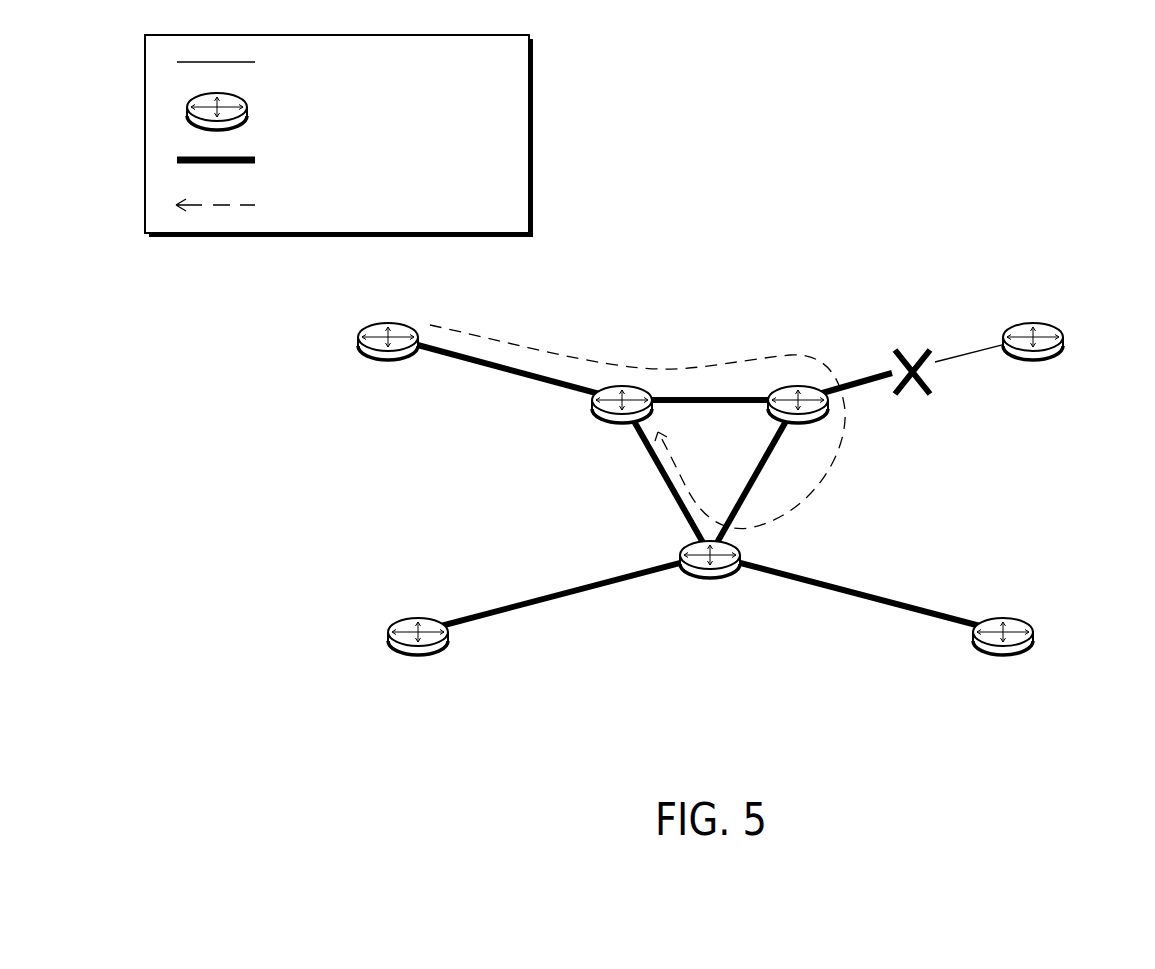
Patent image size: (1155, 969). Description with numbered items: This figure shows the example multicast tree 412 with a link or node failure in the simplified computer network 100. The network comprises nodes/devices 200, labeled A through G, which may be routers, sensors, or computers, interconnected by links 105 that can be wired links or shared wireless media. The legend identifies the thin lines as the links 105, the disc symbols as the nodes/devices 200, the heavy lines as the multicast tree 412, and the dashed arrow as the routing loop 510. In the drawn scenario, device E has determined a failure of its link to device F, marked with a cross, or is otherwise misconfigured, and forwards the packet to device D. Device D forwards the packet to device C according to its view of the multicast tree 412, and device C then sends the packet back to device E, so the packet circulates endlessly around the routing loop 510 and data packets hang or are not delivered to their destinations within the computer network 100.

The computer network 100 is at (978, 165).
The links 105 is at (605, 205).
The nodes/devices 200 is at (625, 392).
The multicast tree 412 is at (590, 389).
The routing loop 510 is at (510, 361).